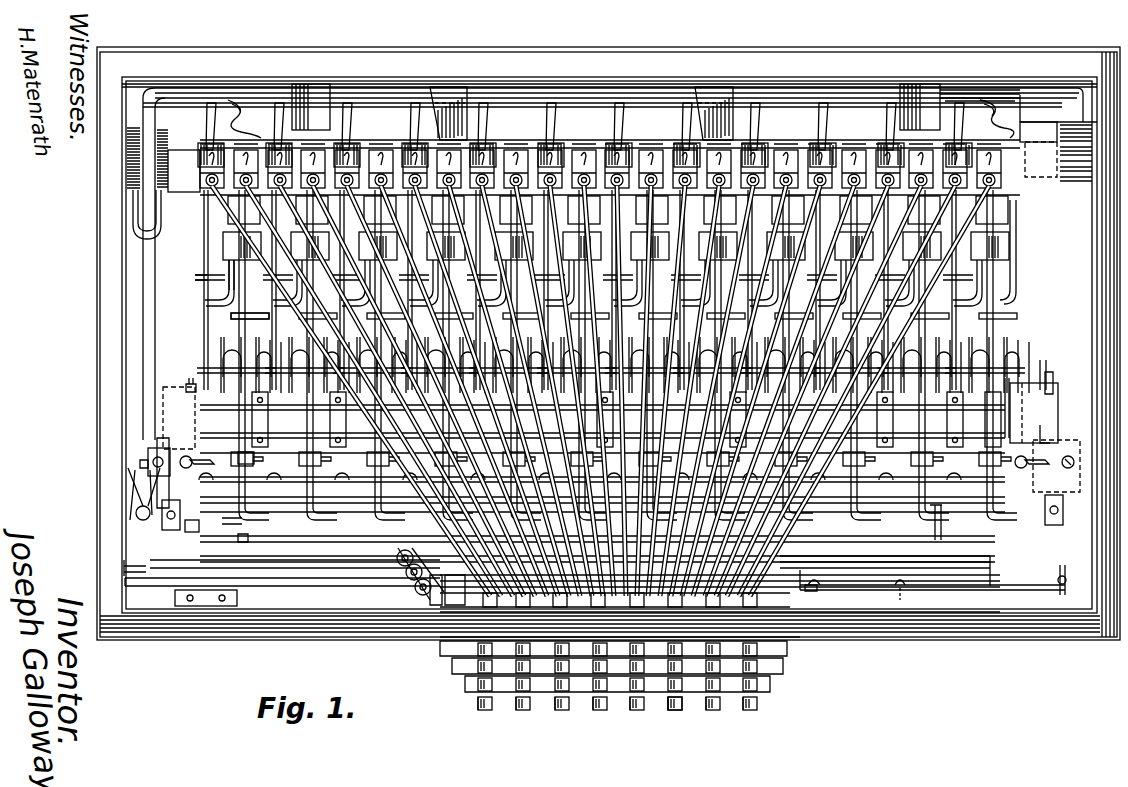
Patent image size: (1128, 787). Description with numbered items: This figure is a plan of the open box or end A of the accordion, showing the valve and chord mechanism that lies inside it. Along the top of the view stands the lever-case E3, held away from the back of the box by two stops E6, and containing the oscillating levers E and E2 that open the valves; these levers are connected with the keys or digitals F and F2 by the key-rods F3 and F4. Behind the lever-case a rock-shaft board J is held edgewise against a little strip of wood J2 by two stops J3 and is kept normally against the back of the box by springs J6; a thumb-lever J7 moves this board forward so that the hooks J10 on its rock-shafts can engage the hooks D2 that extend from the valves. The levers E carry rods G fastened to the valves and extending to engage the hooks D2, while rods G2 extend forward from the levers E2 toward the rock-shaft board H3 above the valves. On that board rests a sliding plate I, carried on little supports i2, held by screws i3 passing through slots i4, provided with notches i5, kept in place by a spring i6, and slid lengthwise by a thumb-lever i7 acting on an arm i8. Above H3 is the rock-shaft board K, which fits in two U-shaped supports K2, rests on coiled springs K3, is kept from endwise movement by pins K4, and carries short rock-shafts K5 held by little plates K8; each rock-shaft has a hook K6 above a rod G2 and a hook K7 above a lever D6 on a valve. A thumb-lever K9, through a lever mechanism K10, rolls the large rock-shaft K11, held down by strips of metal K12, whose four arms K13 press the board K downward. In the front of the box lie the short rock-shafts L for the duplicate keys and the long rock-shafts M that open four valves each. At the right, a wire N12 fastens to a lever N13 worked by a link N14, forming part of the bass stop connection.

The box or end A is at (608, 343).
The rock-shaft board J is at (992, 95).
The strip of wood J2 is at (626, 134).
The stops J3 is at (306, 88).
The springs J6 is at (238, 102).
The thumb-lever J7 is at (265, 583).
The hook J10 is at (1014, 298).
The oscillating levers E is at (213, 247).
The oscillating levers E2 is at (1036, 217).
The lever-case E3 is at (175, 165).
The stops E6 is at (447, 97).
The rods G is at (1040, 237).
The rods G2 is at (573, 309).
The hook D2 is at (228, 296).
The hook K6 is at (250, 320).
The rock-shaft board K is at (641, 447).
The U-shaped supports K2 is at (190, 383).
The pins K4 is at (168, 393).
The arms K13 is at (160, 441).
The rock-shaft board H3 is at (82, 458).
The sliding plate I is at (150, 456).
The plates K8 is at (252, 418).
The rock-shafts K5 is at (623, 419).
The coiled springs K3 is at (1010, 366).
The rod K' is at (1063, 373).
The slots i4 is at (630, 454).
The notches i5 is at (577, 450).
The supports i2 is at (1072, 445).
The screws i3 is at (140, 504).
The spring i6 is at (152, 520).
The strips of metal K12 is at (180, 533).
The hook K7 is at (222, 521).
The lever D6 is at (238, 538).
The rock-shafts M is at (911, 568).
The arm i8 is at (285, 578).
The lever mechanism K10 is at (193, 573).
The thumb-lever K9 is at (402, 566).
The thumb-lever i7 is at (428, 580).
The rock-shafts L is at (447, 602).
The lever N13 is at (1040, 592).
The wire N12 is at (72, 288).
The link N14 is at (850, 586).
The key-rods F4 is at (805, 580).
The rock-shaft K11 is at (942, 522).
The key-rods F3 is at (802, 637).
The keys or digitals F is at (630, 694).
The keys or digitals F2 is at (476, 662).
The key block F' is at (662, 701).